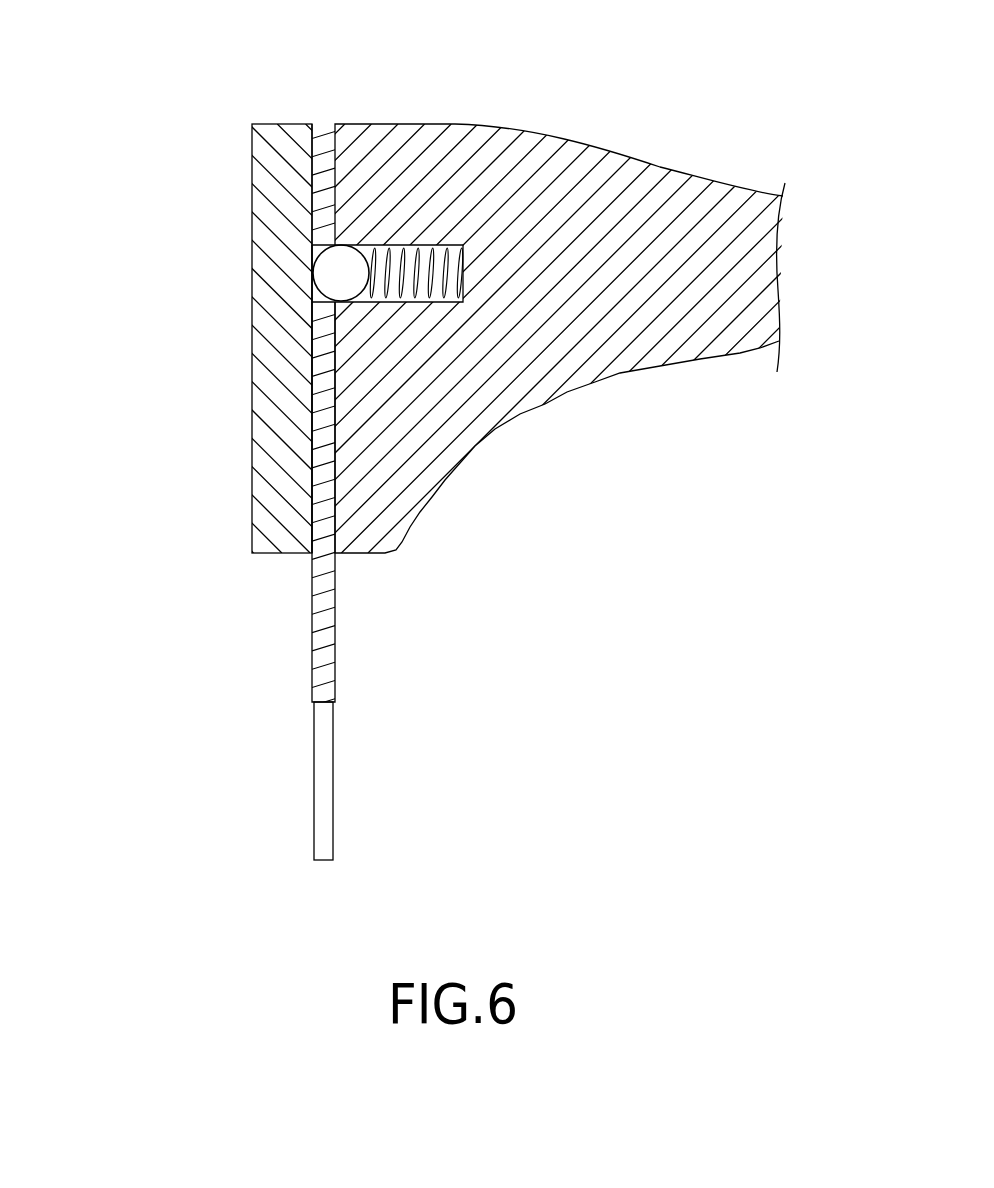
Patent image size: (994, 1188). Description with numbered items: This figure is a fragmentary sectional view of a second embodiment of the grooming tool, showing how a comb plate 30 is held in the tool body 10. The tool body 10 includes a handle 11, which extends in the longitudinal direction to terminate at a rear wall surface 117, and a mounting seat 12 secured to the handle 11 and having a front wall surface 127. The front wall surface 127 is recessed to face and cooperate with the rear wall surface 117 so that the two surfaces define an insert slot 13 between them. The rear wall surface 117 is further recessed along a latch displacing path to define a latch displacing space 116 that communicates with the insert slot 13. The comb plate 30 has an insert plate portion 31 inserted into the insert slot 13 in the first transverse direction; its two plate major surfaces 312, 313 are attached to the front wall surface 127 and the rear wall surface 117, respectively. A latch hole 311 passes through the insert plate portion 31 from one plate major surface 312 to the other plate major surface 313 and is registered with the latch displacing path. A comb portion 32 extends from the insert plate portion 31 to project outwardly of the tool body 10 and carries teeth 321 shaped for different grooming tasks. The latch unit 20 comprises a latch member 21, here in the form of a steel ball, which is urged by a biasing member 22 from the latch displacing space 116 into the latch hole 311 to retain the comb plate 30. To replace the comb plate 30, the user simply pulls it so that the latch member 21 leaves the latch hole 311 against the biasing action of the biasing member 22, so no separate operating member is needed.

The tool body 10 is at (497, 299).
The handle 11 is at (659, 158).
The mounting seat 12 is at (266, 148).
The insert slot 13 is at (310, 217).
The latch unit 20 is at (358, 170).
The latch member 21 is at (348, 246).
The biasing member 22 is at (427, 262).
The comb plate 30 is at (284, 451).
The insert plate portion 31 is at (275, 374).
The latch hole 311 is at (312, 310).
The plate major surface 312 is at (312, 395).
The plate major surface 313 is at (337, 432).
The comb portion 32 is at (403, 781).
The teeth 321 is at (323, 777).
The latch displacing space 116 is at (424, 301).
The rear wall surface 117 is at (404, 466).
The front wall surface 127 is at (194, 427).